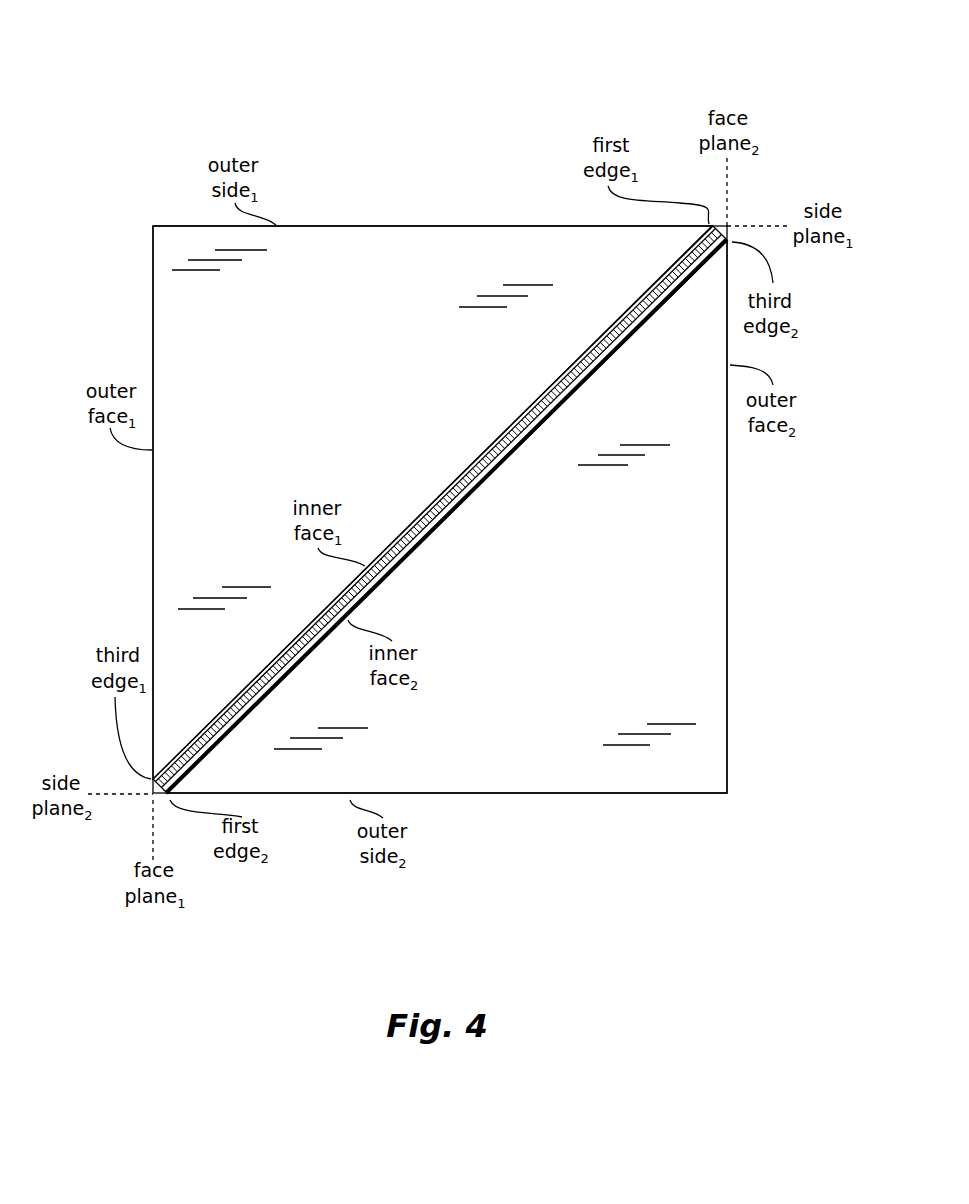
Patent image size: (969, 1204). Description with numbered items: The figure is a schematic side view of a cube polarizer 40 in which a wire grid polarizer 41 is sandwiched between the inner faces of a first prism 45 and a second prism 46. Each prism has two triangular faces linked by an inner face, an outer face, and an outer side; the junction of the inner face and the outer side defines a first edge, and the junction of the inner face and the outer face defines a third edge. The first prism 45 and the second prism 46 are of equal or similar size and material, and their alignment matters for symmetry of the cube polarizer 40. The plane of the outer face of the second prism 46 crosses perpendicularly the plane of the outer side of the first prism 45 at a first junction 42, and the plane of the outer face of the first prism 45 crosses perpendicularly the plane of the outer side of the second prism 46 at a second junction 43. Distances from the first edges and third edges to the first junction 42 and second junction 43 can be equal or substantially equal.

The cube polarizer 40 is at (449, 68).
The wire grid polarizer 41 is at (545, 395).
The first junction 42 is at (727, 224).
The second junction 43 is at (154, 800).
The first prism 45 is at (306, 418).
The second prism 46 is at (570, 658).